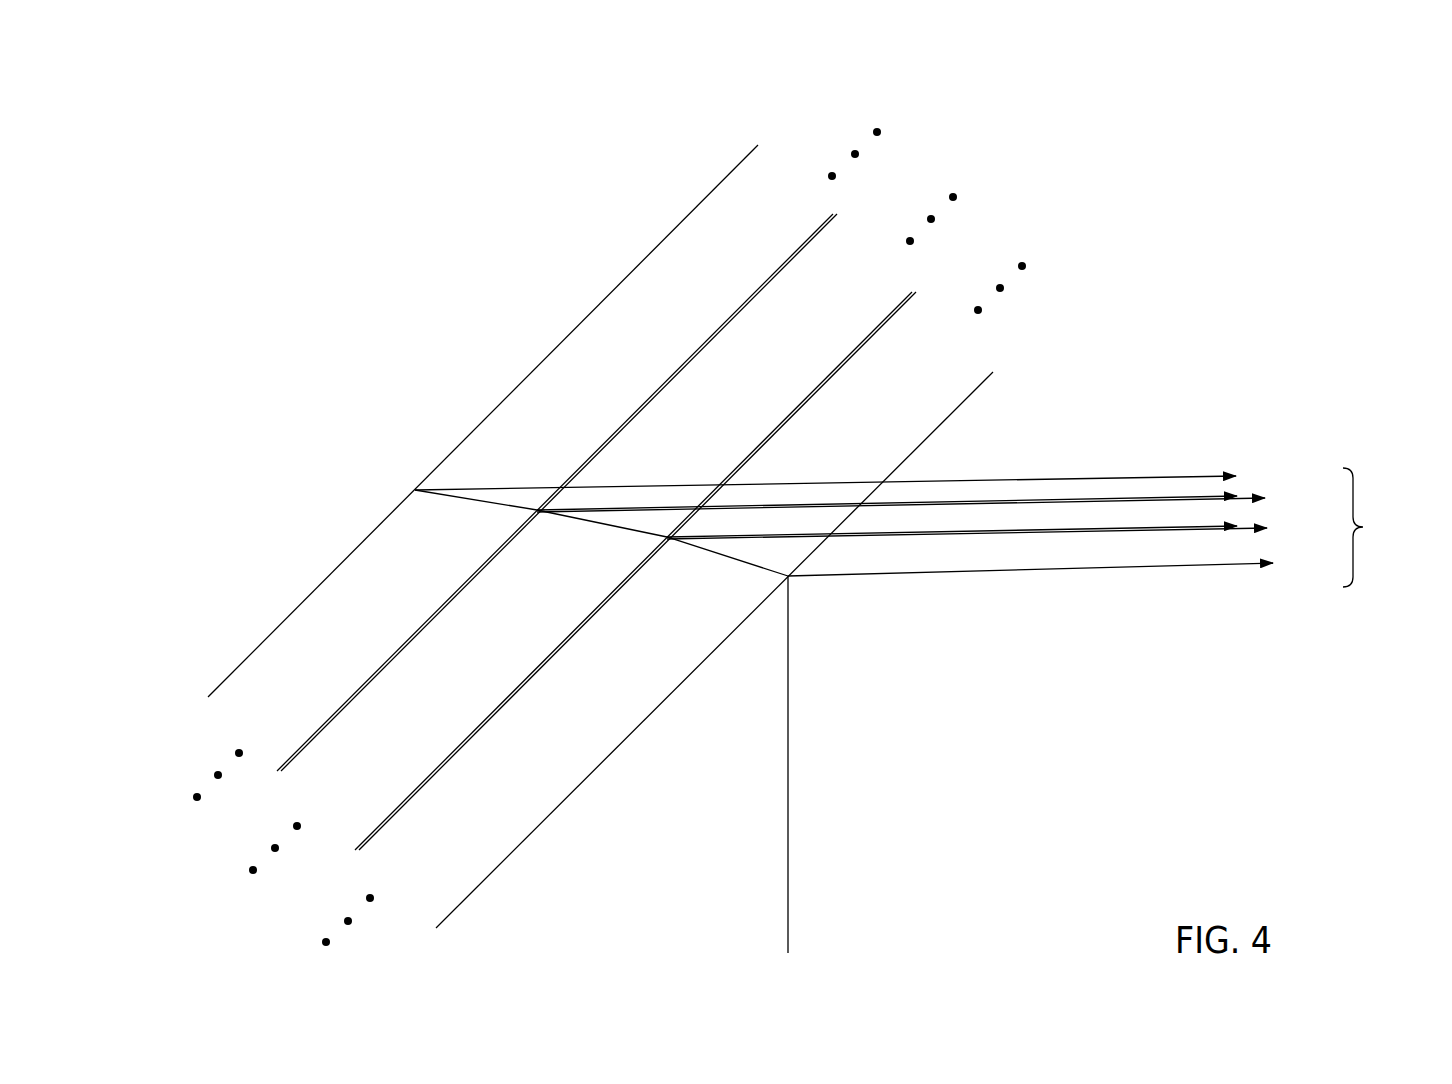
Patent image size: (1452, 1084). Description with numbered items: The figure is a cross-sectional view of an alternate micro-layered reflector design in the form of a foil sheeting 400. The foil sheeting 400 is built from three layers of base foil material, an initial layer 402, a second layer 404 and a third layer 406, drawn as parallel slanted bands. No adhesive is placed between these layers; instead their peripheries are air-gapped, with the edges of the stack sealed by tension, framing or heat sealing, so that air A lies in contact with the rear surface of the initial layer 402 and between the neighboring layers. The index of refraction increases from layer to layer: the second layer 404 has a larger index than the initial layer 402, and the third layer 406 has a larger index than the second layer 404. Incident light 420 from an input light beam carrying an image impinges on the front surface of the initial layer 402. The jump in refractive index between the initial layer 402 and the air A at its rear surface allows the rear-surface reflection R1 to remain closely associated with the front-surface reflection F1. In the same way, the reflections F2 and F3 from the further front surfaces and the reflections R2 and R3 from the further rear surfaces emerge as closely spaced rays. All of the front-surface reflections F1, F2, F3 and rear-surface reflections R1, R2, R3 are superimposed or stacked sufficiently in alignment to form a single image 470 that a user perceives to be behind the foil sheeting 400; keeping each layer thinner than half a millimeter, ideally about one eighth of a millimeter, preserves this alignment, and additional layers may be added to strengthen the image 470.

The foil sheeting 400 is at (1210, 126).
The initial layer 402 is at (487, 848).
The second layer 404 is at (382, 702).
The third layer 406 is at (343, 608).
The incident light 420 is at (792, 845).
The single image 470 is at (1387, 527).
The reflection of incident light from rear surface of initial layer R1 is at (1222, 531).
The image reflection from rear surface of second layer R2 is at (1222, 500).
The image reflection from rear surface of third layer R3 is at (1228, 472).
The reflection of incident light from front surface of initial layer F1 is at (1237, 565).
The image reflection from front surface of second layer F2 is at (1257, 535).
The image reflection from front surface of third layer F3 is at (1262, 490).
The air A is at (272, 773).